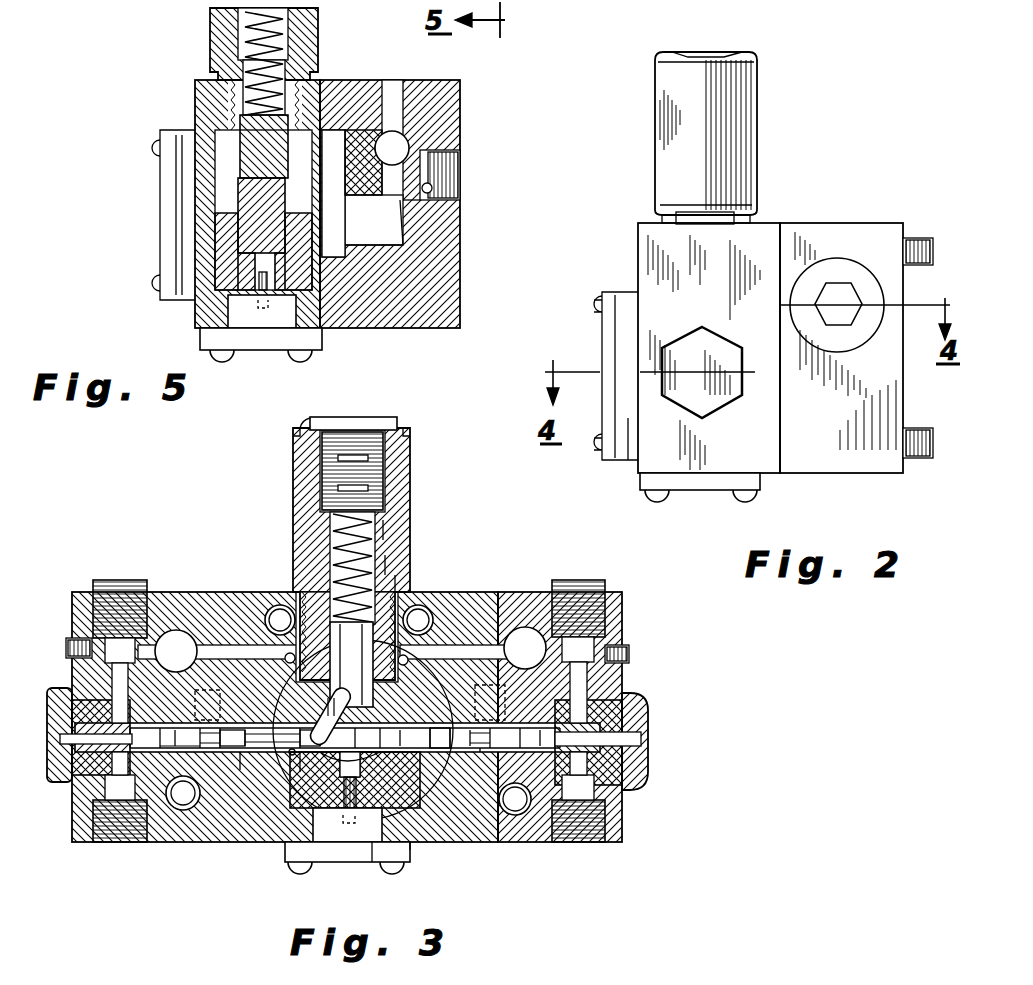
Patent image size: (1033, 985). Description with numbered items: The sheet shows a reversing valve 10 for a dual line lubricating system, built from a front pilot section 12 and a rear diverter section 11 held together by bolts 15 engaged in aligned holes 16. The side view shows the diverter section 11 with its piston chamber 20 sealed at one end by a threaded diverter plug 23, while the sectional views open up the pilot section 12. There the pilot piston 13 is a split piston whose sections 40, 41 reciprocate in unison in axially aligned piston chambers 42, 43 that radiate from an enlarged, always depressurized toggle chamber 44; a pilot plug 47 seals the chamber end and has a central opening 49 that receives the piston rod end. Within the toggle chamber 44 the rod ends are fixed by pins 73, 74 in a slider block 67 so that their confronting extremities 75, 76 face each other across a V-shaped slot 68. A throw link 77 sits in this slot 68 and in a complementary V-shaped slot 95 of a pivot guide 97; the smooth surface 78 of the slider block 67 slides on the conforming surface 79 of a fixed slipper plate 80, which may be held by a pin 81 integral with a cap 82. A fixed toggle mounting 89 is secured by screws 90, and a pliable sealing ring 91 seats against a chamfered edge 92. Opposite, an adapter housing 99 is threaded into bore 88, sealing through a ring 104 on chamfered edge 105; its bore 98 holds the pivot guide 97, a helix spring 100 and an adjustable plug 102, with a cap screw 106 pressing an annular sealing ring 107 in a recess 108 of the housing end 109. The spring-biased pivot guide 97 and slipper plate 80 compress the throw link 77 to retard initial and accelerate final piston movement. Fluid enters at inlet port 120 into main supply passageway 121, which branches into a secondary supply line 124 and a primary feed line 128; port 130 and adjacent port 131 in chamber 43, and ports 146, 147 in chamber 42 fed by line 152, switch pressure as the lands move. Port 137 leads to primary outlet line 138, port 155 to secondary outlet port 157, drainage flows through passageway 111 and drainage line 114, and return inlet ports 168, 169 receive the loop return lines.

In FIG. 2, the reversing valve 10 is at (806, 220).
In FIG. 5, the rear section (diverter section) 11 is at (432, 80).
In FIG. 2, the rear section (diverter section) 11 is at (872, 225).
In FIG. 3, the rear section (diverter section) 11 is at (285, 717).
In FIG. 5, the front section (pilot section) 12 is at (228, 78).
In FIG. 2, the front section (pilot section) 12 is at (648, 222).
In FIG. 3, the front section (pilot section) 12 is at (622, 610).
In FIG. 3, the pilot piston 13 is at (552, 755).
In FIG. 2, the bolts 15 is at (924, 238).
In FIG. 3, the aligned holes 16 is at (265, 610).
In FIG. 5, the piston chamber 20 is at (406, 148).
In FIG. 2, the diverter plug 23 is at (845, 352).
In FIG. 3, the piston section 40 is at (245, 776).
In FIG. 3, the piston section 41 is at (465, 718).
In FIG. 3, the piston chamber 42 is at (440, 726).
In FIG. 3, the piston chamber 43 is at (228, 722).
In FIG. 5, the toggle chamber 44 is at (312, 160).
In FIG. 3, the toggle chamber 44 is at (414, 722).
In FIG. 2, the pilot plug 47 is at (722, 330).
In FIG. 3, the pilot plug 47 is at (650, 706).
In FIG. 3, the centrally disposed opening 49 is at (614, 743).
In FIG. 3, the slider block 67 is at (300, 766).
In FIG. 3, the V-shaped slot 68 is at (290, 760).
In FIG. 3, the pin 73 is at (362, 760).
In FIG. 3, the pin 74 is at (292, 714).
In FIG. 3, the rod extremity 75 is at (284, 716).
In FIG. 3, the rod extremity 76 is at (345, 758).
In FIG. 5, the throw link 77 is at (240, 190).
In FIG. 3, the throw link 77 is at (320, 726).
In FIG. 3, the smooth surface 78 is at (362, 786).
In FIG. 3, the conforming surface 79 is at (368, 753).
In FIG. 5, the slipper plate 80 is at (218, 222).
In FIG. 3, the slipper plate 80 is at (406, 812).
In FIG. 5, the pin 81 is at (260, 282).
In FIG. 3, the pin 81 is at (358, 800).
In FIG. 5, the cap 82 is at (244, 322).
In FIG. 3, the cap 82 is at (334, 835).
In FIG. 3, the bore 88 is at (300, 610).
In FIG. 5, the fixed toggle mounting 89 is at (261, 339).
In FIG. 2, the fixed toggle mounting 89 is at (714, 490).
In FIG. 3, the fixed toggle mounting 89 is at (310, 866).
In FIG. 5, the screws 90 is at (261, 356).
In FIG. 2, the screws 90 is at (665, 500).
In FIG. 3, the screws 90 is at (294, 874).
In FIG. 3, the pliable sealing ring 91 is at (378, 862).
In FIG. 3, the chamfered edge 92 is at (420, 843).
In FIG. 3, the V-shaped slot 95 is at (342, 706).
In FIG. 5, the pivot guide 97 is at (240, 145).
In FIG. 3, the pivot guide 97 is at (360, 694).
In FIG. 3, the bore 98 is at (395, 526).
In FIG. 5, the adapter housing 99 is at (213, 30).
In FIG. 2, the adapter housing 99 is at (752, 98).
In FIG. 3, the adapter housing 99 is at (409, 496).
In FIG. 5, the helix spring 100 is at (300, 24).
In FIG. 3, the helix spring 100 is at (330, 540).
In FIG. 3, the adjustable plug 102 is at (384, 480).
In FIG. 3, the pliable sealing ring 104 is at (410, 578).
In FIG. 3, the chamfered edge 105 is at (396, 556).
In FIG. 3, the cap screw 106 is at (378, 416).
In FIG. 3, the annular sealing ring 107 is at (411, 440).
In FIG. 3, the annular recess 108 is at (292, 436).
In FIG. 3, the adapter housing end 109 is at (300, 418).
In FIG. 5, the drainage passageway 111 is at (440, 216).
In FIG. 5, the drainage line 114 is at (374, 248).
In FIG. 5, the inlet port 120 is at (455, 162).
In FIG. 5, the main supply passageway 121 is at (438, 198).
In FIG. 5, the secondary supply line 124 is at (398, 205).
In FIG. 3, the primary feed line 128 is at (212, 645).
In FIG. 3, the port 130 is at (198, 705).
In FIG. 3, the port 131 is at (216, 757).
In FIG. 3, the port 137 is at (100, 693).
In FIG. 3, the primary outlet line 138 is at (176, 630).
In FIG. 3, the port 146 is at (498, 703).
In FIG. 3, the port 147 is at (484, 753).
In FIG. 3, the primary secondary feed line 152 is at (496, 644).
In FIG. 3, the port 155 is at (584, 690).
In FIG. 3, the secondary outlet port 157 is at (525, 627).
In FIG. 3, the return inlet port 168 is at (118, 842).
In FIG. 3, the return inlet port 169 is at (580, 842).